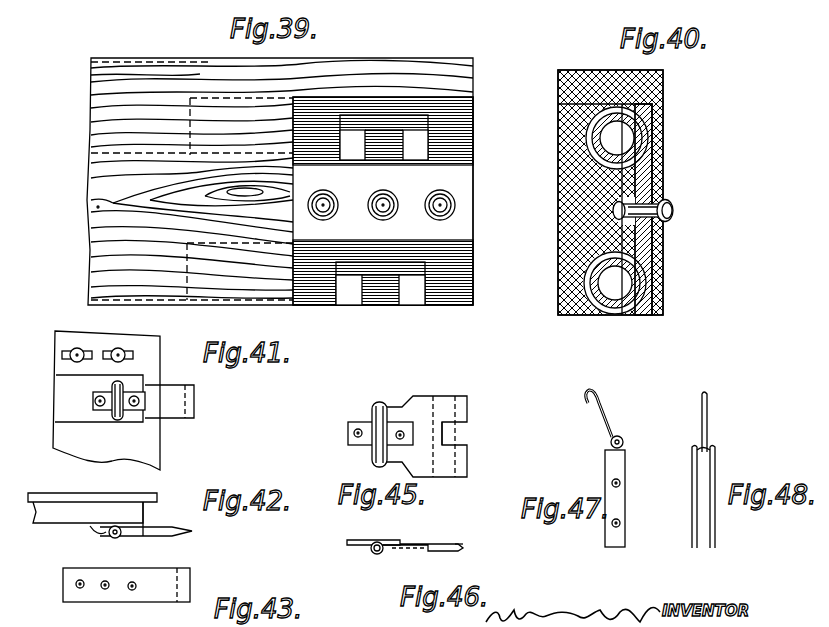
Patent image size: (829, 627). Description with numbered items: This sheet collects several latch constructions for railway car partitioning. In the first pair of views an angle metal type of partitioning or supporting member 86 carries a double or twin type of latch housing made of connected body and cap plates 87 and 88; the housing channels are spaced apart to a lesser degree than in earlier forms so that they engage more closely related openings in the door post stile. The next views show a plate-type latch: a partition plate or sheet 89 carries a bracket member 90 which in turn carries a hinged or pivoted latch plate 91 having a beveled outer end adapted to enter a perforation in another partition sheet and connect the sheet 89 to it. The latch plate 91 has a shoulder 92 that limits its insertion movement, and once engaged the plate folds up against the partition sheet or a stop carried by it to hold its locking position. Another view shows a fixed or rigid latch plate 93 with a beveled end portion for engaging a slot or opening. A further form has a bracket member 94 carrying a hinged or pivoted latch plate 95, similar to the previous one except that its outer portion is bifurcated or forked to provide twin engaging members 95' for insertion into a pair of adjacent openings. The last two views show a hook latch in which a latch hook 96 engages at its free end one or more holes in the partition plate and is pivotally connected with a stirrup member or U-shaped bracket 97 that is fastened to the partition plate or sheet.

In FIG. 39, the partitioning or supporting member 86 is at (98, 207).
In FIG. 40, the partitioning or supporting member 86 is at (655, 201).
In FIG. 40, the body plate 87 is at (650, 147).
In FIG. 39, the cap plate 88 is at (470, 241).
In FIG. 40, the cap plate 88 is at (625, 190).
In FIG. 41, the partition plate or sheet 89 is at (62, 362).
In FIG. 42, the partition plate or sheet 89 is at (62, 484).
In FIG. 41, the bracket member 90 is at (93, 398).
In FIG. 42, the bracket member 90 is at (92, 533).
In FIG. 41, the latch plate 91 is at (167, 392).
In FIG. 42, the latch plate 91 is at (140, 537).
In FIG. 42, the shoulder 92 is at (158, 537).
In FIG. 43, the fixed latch plate 93 is at (70, 581).
In FIG. 45, the bracket member 94 is at (348, 431).
In FIG. 46, the bracket member 94 is at (364, 545).
In FIG. 45, the latch plate 95 is at (427, 417).
In FIG. 46, the latch plate 95 is at (423, 534).
In FIG. 45, the twin engaging members 95' is at (479, 437).
In FIG. 46, the twin engaging members 95' is at (485, 549).
In FIG. 47, the latch hook 96 is at (608, 403).
In FIG. 48, the latch hook 96 is at (708, 414).
In FIG. 47, the stirrup member or U-shaped bracket 97 is at (608, 468).
In FIG. 48, the stirrup member or U-shaped bracket 97 is at (692, 488).